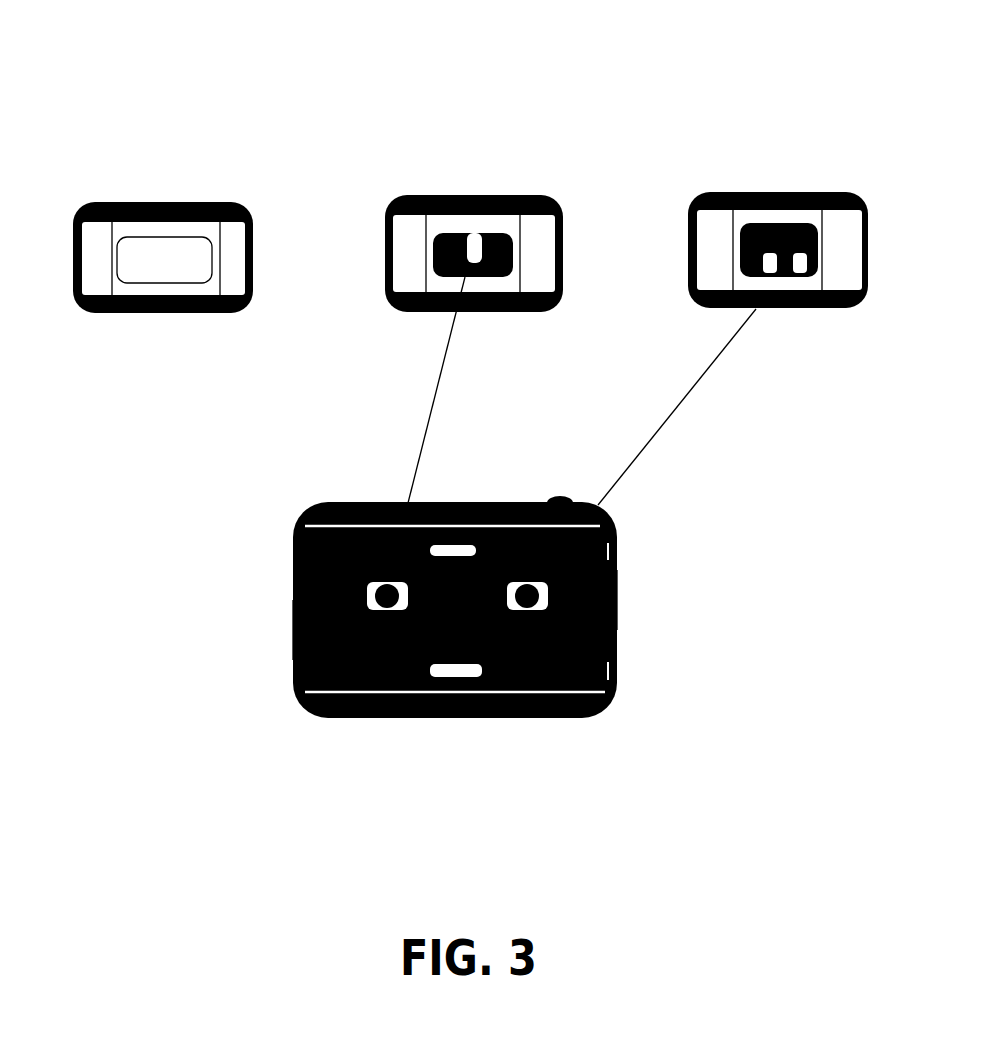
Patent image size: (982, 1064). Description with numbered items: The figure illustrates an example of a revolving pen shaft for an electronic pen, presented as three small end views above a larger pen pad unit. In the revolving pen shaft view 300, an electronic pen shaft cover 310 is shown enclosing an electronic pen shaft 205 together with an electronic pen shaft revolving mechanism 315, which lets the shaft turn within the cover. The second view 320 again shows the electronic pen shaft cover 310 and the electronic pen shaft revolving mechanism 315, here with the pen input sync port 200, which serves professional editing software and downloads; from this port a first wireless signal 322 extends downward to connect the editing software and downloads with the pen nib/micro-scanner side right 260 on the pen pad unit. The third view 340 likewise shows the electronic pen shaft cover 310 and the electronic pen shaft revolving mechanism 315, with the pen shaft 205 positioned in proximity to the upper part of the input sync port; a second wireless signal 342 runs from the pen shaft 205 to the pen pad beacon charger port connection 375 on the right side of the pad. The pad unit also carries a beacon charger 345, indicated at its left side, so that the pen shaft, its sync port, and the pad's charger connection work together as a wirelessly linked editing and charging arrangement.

The pen input sync port 200 is at (473, 260).
The electronic pen shaft 205 is at (167, 253).
The pen nib/micro-scanner side right 260 is at (293, 557).
The revolving pen shaft view 300 is at (98, 107).
The electronic pen shaft cover 310 is at (102, 237).
The electronic pen shaft revolving mechanism 315 is at (210, 290).
The second view 320 is at (398, 90).
The first wireless signal 322 is at (433, 412).
The third view 340 is at (730, 83).
The second wireless signal 342 is at (687, 385).
The beacon charger 345 is at (293, 628).
The pen pad beacon charger port connection 375 is at (618, 597).